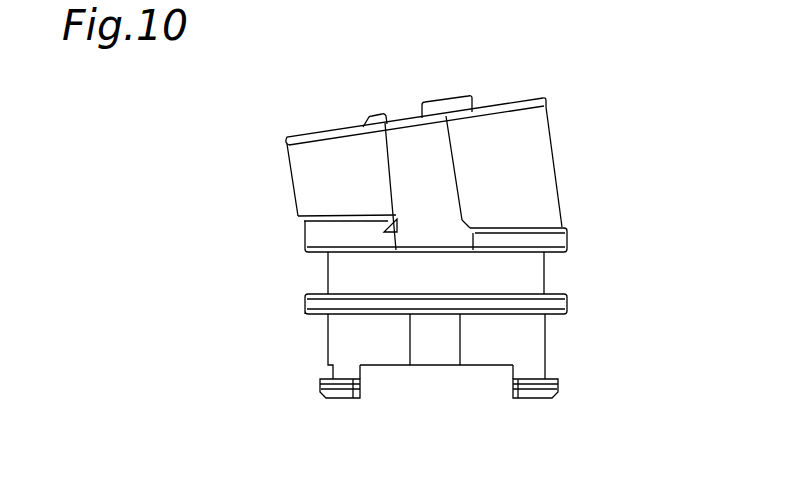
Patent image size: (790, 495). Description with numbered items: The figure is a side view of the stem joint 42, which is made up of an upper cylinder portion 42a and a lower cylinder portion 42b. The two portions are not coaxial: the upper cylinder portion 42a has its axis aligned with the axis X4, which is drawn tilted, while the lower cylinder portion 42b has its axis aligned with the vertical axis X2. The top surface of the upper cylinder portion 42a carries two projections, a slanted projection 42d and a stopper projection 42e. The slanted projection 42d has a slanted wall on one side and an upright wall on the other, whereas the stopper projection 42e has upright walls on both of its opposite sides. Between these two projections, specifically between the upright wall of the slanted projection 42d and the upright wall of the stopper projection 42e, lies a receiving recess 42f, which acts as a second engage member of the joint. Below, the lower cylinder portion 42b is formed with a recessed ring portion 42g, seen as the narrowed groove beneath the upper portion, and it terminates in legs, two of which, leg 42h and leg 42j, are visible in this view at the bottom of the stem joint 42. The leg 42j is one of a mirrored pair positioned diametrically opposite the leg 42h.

The stem joint 42 is at (514, 81).
The upper cylinder portion 42a is at (618, 88).
The lower cylinder portion 42b is at (618, 253).
The slanted projection 42d is at (375, 117).
The stopper projection 42e is at (460, 101).
The receiving recess 42f is at (408, 117).
The recessed ring portion 42g is at (545, 270).
The leg 42h is at (533, 403).
The leg 42j is at (335, 400).
The axis X4 is at (433, 243).
The axis X2 is at (435, 253).